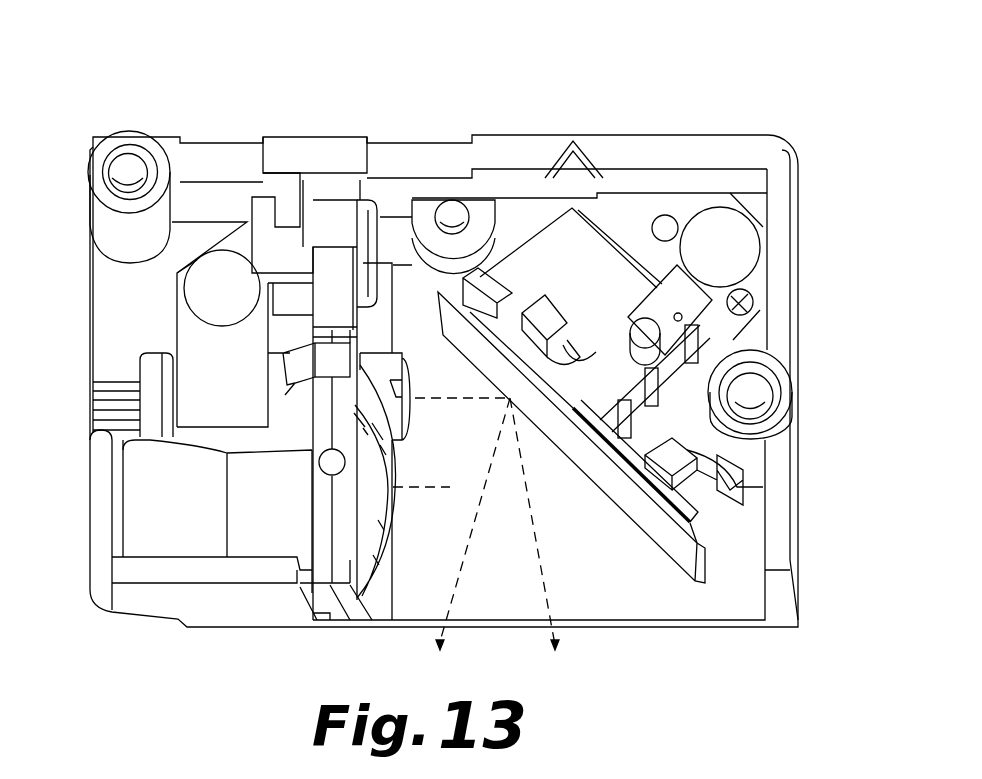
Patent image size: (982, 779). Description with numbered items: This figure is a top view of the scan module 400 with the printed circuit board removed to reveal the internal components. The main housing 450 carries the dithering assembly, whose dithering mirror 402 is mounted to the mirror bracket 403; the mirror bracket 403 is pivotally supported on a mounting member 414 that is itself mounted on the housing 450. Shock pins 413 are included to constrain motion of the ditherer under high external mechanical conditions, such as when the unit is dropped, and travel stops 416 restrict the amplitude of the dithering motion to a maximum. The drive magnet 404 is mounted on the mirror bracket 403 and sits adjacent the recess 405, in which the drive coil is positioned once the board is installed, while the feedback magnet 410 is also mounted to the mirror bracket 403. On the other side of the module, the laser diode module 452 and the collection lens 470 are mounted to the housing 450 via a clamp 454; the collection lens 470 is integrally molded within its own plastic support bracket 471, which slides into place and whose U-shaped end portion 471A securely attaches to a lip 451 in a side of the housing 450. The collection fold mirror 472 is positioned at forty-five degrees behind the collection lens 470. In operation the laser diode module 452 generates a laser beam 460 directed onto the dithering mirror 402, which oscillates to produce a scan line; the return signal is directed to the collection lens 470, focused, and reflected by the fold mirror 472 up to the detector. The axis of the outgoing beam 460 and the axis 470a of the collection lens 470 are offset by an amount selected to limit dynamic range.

The scan module 400 is at (180, 52).
The dithering mirror 402 is at (598, 470).
The mirror bracket 403 is at (687, 503).
The drive magnet 404 is at (547, 313).
The recess 405 is at (603, 263).
The feedback magnet 410 is at (697, 447).
The shock pin 413 is at (685, 292).
The mounting member 414 is at (698, 283).
The travel stop 416 is at (490, 282).
The main housing 450 is at (735, 612).
The lip 451 is at (287, 192).
The laser diode module 452 is at (167, 380).
The clamp 454 is at (220, 402).
The laser beam 460 is at (448, 402).
The collection lens 470 is at (380, 530).
The axis of the collection lens 470a is at (435, 487).
The support bracket 471 is at (388, 263).
The U-shaped end portion 471A is at (257, 210).
The collection fold mirror 472 is at (163, 520).